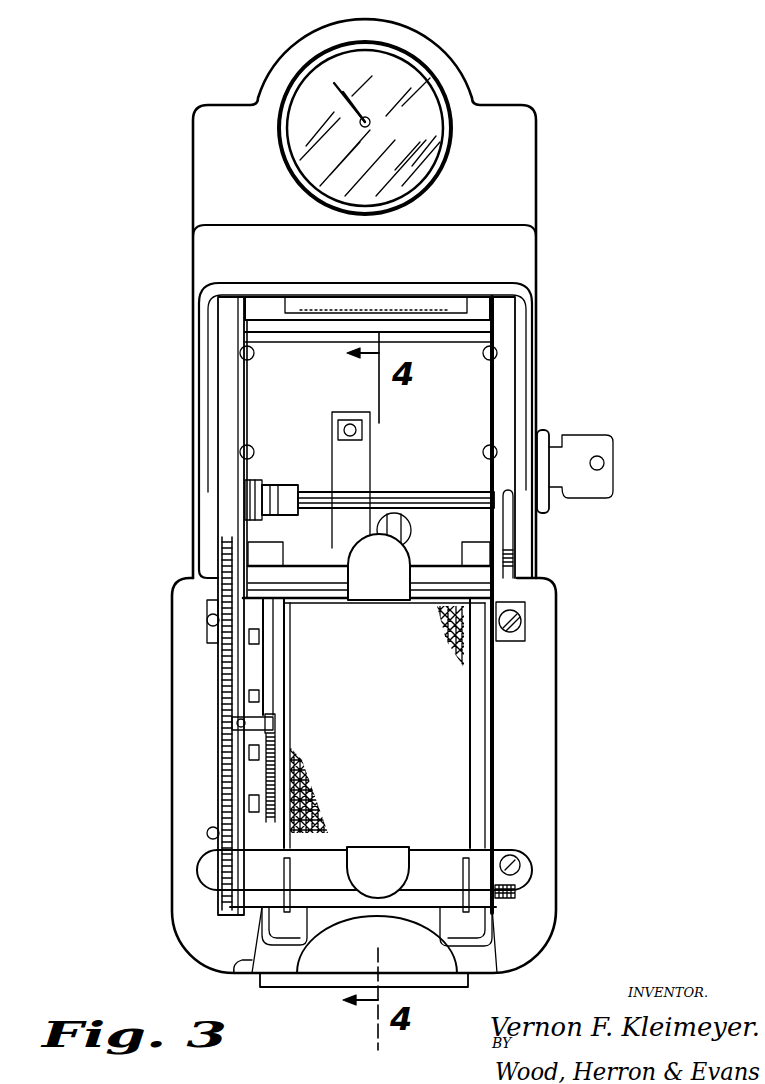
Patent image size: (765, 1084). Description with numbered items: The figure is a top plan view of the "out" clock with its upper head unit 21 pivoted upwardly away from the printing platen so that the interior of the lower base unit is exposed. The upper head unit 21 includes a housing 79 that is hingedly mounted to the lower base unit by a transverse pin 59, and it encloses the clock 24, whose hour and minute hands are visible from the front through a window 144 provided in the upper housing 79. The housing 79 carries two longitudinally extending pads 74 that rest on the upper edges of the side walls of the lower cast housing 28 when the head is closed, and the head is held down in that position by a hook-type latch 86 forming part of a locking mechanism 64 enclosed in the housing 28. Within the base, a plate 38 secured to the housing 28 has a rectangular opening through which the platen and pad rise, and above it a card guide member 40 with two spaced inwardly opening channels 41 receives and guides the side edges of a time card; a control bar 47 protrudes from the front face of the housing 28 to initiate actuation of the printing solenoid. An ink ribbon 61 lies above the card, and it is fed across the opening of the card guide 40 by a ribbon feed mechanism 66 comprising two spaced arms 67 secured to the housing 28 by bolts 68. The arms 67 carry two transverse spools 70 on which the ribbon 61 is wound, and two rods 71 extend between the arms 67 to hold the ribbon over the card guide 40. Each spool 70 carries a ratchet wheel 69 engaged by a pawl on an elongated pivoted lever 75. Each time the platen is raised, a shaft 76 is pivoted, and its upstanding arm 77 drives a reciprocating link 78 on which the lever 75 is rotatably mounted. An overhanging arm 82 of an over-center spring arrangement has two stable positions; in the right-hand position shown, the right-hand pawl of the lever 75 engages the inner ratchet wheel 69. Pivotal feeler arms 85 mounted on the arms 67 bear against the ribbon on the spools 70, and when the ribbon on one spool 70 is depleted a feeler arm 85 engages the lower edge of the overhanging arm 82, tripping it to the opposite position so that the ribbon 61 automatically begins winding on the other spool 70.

The upper head unit 21 is at (506, 252).
The clock 24 is at (402, 102).
The cast housing 28 is at (537, 382).
The plate 38 is at (337, 957).
The card guide member 40 is at (287, 957).
The channels 41 is at (234, 970).
The control bar 47 is at (447, 990).
The transverse pin 59 is at (265, 320).
The ink ribbon 61 is at (369, 605).
The locking mechanism 64 is at (549, 447).
The ribbon feed mechanism 66 is at (208, 810).
The spaced arms 67 is at (497, 707).
The bolts 68 is at (254, 356).
The ratchet wheel 69 is at (222, 565).
The transverse spools 70 is at (445, 556).
The rods 71 is at (430, 592).
The longitudinally extending pads 74 is at (517, 560).
The elongated pivoted lever 75 is at (232, 680).
The shaft 76 is at (407, 500).
The upstanding arm 77 is at (262, 486).
The link 78 is at (248, 661).
The housing 79 is at (518, 188).
The overhanging arm 82 is at (250, 720).
The feeler arms 85 is at (366, 585).
The hook-type latch 86 is at (508, 530).
The window 144 is at (323, 168).